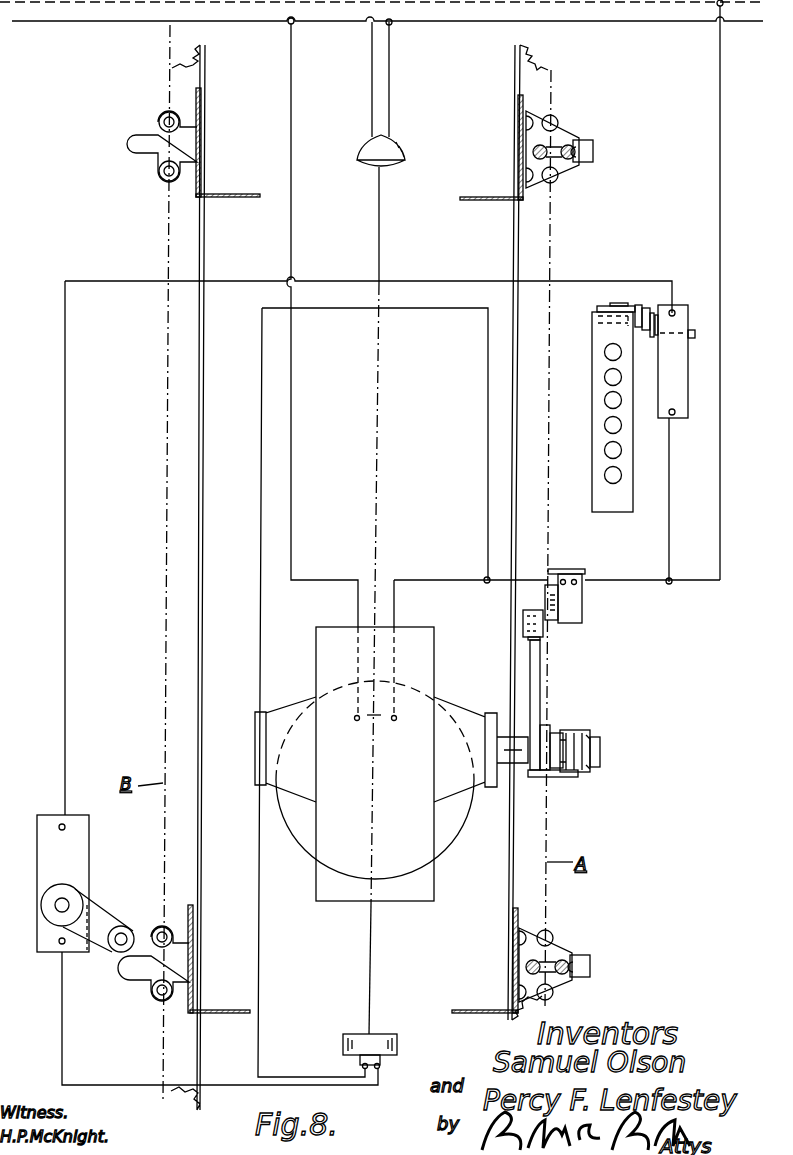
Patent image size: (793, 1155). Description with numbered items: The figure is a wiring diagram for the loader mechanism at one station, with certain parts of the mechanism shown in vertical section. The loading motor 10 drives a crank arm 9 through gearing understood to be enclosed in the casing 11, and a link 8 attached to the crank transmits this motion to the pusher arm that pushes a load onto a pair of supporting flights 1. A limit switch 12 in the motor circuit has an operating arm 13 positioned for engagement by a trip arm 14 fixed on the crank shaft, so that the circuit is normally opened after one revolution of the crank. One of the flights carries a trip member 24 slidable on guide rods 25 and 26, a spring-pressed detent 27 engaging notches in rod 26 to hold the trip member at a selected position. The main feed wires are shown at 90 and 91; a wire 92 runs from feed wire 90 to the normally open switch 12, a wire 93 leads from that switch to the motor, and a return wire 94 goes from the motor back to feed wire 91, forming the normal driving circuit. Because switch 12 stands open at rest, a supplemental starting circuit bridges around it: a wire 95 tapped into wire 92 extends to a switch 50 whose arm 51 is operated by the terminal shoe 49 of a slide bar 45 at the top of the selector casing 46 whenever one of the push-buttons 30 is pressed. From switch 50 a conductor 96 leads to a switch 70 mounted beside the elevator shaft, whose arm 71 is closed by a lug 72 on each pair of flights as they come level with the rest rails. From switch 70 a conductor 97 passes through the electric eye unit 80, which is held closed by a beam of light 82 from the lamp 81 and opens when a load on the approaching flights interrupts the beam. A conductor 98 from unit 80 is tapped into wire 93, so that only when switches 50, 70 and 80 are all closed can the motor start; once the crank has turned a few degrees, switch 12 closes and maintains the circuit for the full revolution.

The supporting flights 1 is at (478, 1010).
The link 8 is at (590, 776).
The crank arm 9 is at (582, 731).
The motor 10 is at (376, 780).
The casing 11 is at (375, 764).
The limit switch 12 is at (567, 602).
The operating arm 13 is at (523, 612).
The trip arm 14 is at (540, 676).
The trip member 24 is at (590, 958).
The guide rod 25 is at (530, 965).
The guide rod 26 is at (545, 977).
The spring-pressed detent 27 is at (568, 957).
The push-buttons 30 is at (606, 468).
The slide bar 45 is at (615, 306).
The casing 46 is at (607, 505).
The terminal shoe 49 is at (632, 306).
The switch 50 is at (676, 379).
The switch arm 51 is at (650, 310).
The switch 70 is at (90, 868).
The switch arm 71 is at (102, 922).
The lug 72 is at (128, 982).
The electric eye switch unit 80 is at (397, 1043).
The lamp 81 is at (405, 157).
The beam of light 82 is at (380, 348).
The main feed wire 90 is at (593, 0).
The main feed wire 91 is at (660, 3).
The wire 92 is at (720, 532).
The wire 93 is at (440, 580).
The return wire 94 is at (291, 362).
The wire 95 is at (672, 478).
The conductor wire 96 is at (65, 658).
The conductor 97 is at (62, 1027).
The conductor 98 is at (280, 951).